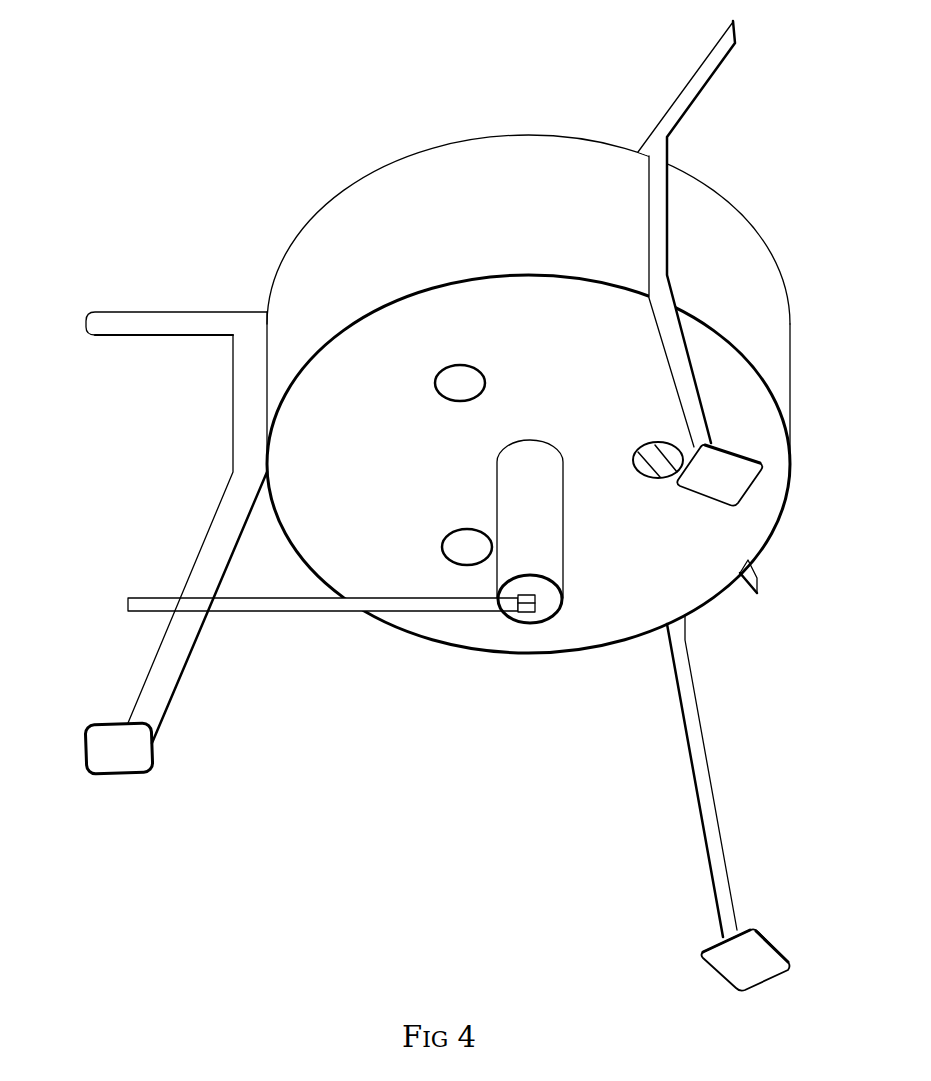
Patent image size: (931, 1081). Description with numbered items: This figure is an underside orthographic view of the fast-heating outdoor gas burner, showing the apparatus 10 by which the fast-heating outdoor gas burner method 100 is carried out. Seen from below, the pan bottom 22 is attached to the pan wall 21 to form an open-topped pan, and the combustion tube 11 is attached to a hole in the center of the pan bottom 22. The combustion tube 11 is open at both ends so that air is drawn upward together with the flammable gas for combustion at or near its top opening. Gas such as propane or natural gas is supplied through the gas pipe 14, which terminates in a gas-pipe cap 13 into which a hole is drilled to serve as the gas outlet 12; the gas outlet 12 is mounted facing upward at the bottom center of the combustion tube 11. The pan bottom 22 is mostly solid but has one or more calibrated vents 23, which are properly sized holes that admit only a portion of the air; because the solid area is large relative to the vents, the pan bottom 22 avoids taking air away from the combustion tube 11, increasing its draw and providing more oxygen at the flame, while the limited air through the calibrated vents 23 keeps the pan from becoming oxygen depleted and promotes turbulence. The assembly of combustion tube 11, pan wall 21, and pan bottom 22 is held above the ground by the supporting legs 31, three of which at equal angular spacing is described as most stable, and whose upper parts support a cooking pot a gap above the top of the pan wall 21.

The fast-heating outdoor gas burner method 100 is at (153, 168).
The apparatus 10 is at (158, 234).
The pan wall 21 is at (394, 178).
The pan bottom 22 is at (375, 488).
The calibrated vents 23 is at (453, 385).
The combustion tube 11 is at (553, 498).
The gas outlet 12 is at (537, 589).
The gas-pipe cap 13 is at (525, 608).
The gas pipe 14 is at (272, 603).
The supporting legs 31 is at (708, 67).